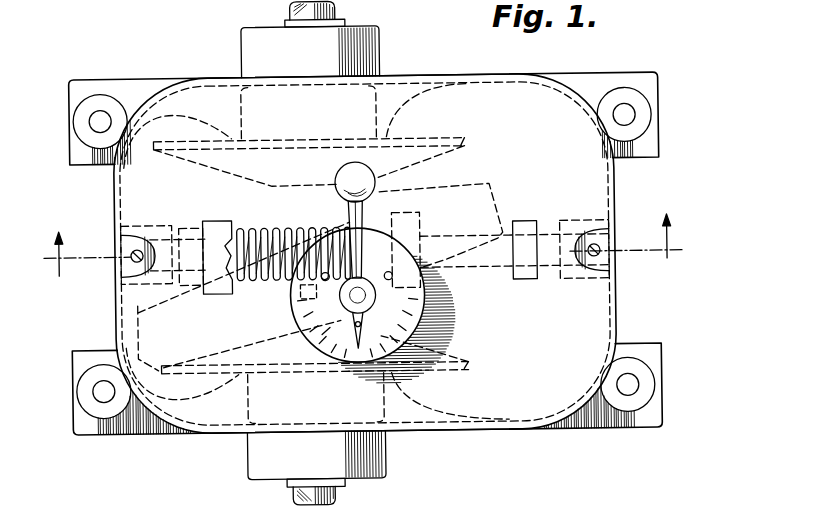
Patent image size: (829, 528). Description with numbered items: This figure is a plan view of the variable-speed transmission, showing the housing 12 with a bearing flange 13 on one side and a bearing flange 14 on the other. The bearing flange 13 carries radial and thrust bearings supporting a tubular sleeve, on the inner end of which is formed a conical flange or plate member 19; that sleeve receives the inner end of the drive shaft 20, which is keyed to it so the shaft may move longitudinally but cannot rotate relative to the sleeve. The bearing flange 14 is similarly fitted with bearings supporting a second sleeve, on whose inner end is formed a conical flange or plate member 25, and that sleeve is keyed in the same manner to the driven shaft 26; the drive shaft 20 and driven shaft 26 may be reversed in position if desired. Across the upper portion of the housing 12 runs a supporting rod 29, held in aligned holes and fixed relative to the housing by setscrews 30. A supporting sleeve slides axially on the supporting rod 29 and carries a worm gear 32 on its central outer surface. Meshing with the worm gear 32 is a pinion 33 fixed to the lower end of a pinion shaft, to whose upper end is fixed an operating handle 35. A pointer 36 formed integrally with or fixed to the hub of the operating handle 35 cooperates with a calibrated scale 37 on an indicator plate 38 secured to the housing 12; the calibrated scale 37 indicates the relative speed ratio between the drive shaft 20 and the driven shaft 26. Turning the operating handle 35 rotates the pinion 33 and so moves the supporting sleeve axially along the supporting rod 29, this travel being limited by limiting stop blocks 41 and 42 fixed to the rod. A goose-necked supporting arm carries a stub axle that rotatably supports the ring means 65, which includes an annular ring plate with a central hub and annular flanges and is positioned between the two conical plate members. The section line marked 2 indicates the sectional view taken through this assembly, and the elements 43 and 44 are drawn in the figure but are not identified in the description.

The section line 2- 2 is at (361, 245).
The housing 12 is at (512, 104).
The bearing flange 13 is at (387, 466).
The bearing flange 14 is at (372, 50).
The conical flange or plate member 19 is at (452, 369).
The drive shaft 20 is at (291, 500).
The conical flange or plate member 25 is at (427, 136).
The driven shaft 26 is at (339, 17).
The supporting rod 29 is at (510, 277).
The setscrews 30 is at (133, 259).
The worm gear 32 is at (268, 227).
The pinion 33 is at (300, 292).
The operating handle 35 is at (378, 190).
The pointer 36 is at (355, 347).
The calibrated scale 37 is at (321, 334).
The indicator plate 38 is at (429, 306).
The limiting stop block 41 is at (531, 221).
The limiting stop block 42 is at (187, 226).
The spring abutment block 43 is at (215, 219).
The bracket 44 is at (421, 222).
The ring means 65 is at (493, 191).